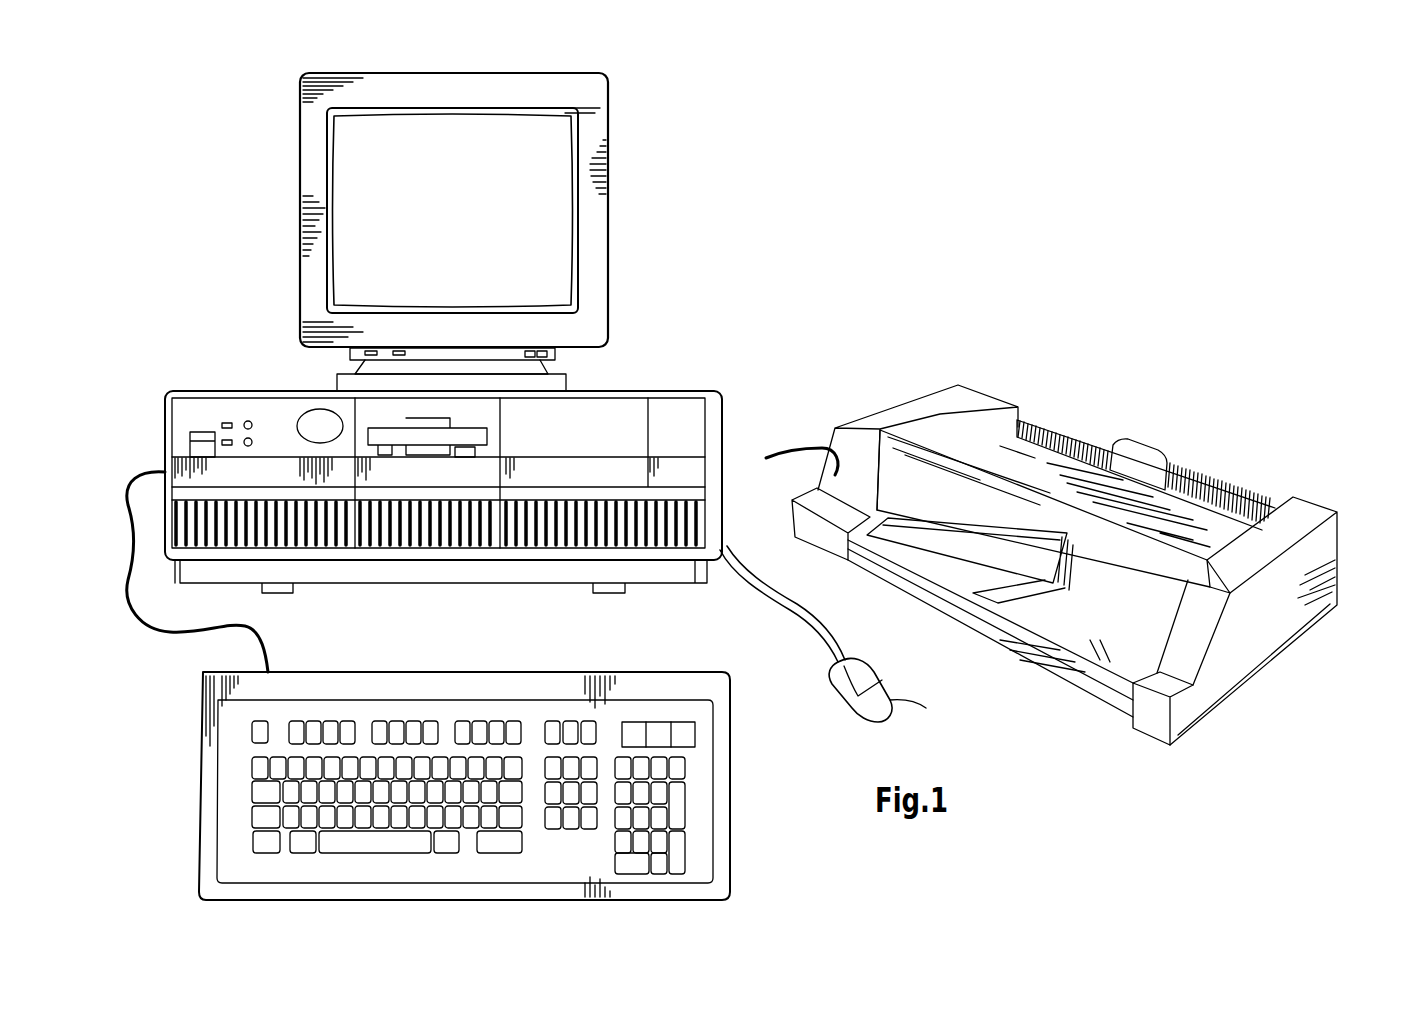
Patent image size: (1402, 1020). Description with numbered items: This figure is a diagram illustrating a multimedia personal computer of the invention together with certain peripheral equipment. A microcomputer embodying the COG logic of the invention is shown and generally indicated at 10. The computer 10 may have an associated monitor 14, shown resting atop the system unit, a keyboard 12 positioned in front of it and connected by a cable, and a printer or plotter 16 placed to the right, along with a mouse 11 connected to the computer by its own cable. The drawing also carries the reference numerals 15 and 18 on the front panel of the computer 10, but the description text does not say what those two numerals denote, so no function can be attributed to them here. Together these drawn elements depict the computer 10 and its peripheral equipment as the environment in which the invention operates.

The microcomputer 10 is at (650, 388).
The mouse 11 is at (939, 727).
The keyboard 12 is at (405, 670).
The monitor 14 is at (612, 244).
The floppy disk drive 15 is at (450, 432).
The printer or plotter 16 is at (908, 393).
The hard disk drive 18 is at (372, 413).